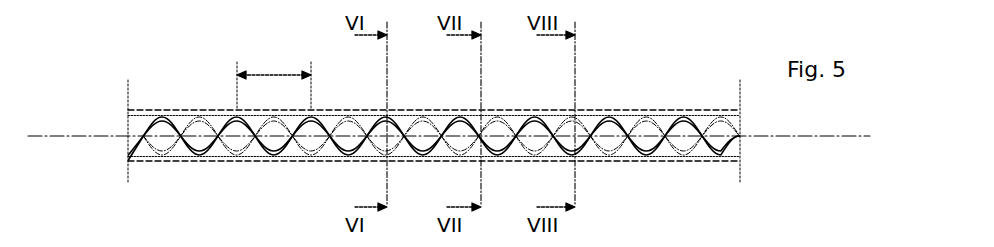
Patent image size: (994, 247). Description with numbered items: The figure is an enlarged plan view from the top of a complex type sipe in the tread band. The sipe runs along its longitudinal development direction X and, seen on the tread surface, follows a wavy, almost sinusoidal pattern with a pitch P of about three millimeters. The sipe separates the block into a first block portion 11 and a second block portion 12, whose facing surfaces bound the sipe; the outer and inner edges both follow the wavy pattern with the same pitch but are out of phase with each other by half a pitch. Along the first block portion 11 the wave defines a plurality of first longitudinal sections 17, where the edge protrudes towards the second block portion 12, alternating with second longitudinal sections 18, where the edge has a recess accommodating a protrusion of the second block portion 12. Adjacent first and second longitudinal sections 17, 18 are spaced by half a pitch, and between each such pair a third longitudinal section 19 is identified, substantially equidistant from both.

The first block portion 11 is at (706, 214).
The second block portion 12 is at (681, 67).
The first longitudinal section 17 is at (161, 113).
The second longitudinal section 18 is at (276, 156).
The third longitudinal section 19 is at (406, 124).
The pitch P is at (281, 72).
The longitudinal development direction X is at (77, 134).